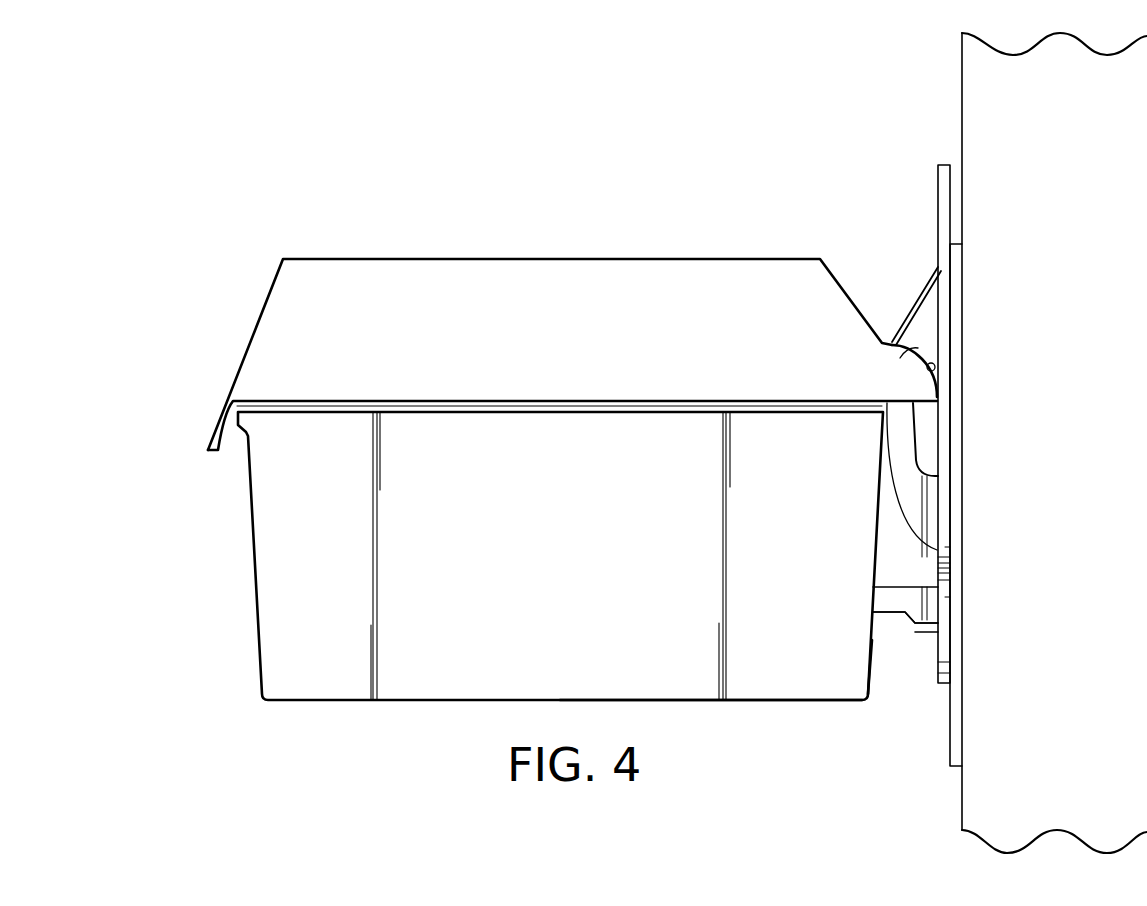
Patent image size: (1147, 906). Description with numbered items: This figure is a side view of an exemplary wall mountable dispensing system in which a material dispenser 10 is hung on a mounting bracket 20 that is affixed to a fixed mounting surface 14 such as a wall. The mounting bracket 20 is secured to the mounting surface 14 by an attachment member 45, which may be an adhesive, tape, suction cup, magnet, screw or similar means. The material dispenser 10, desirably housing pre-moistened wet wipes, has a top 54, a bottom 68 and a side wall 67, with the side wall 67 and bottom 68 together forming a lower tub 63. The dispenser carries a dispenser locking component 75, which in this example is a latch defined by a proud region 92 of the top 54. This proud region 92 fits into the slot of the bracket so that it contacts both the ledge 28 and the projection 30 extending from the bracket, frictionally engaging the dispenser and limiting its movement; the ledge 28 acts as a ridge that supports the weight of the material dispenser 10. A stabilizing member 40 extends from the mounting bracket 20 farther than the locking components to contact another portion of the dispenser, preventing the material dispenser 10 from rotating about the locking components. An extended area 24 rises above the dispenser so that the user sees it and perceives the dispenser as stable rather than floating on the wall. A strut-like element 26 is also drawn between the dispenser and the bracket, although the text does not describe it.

The material dispenser 10 is at (217, 312).
The fixed mounting surface 14 is at (962, 91).
The mounting bracket 20 is at (894, 184).
The extended area 24 is at (944, 199).
The strut 26 is at (908, 308).
The ledge 28 is at (897, 438).
The projection 30 is at (935, 367).
The stabilizing member 40 is at (898, 600).
The attachment member 45 is at (957, 297).
The top 54 is at (413, 258).
The lower tub 63 is at (258, 565).
The side wall 67 is at (872, 683).
The bottom 68 is at (770, 700).
The dispenser locking component 75 is at (880, 360).
The proud region 92 is at (907, 360).